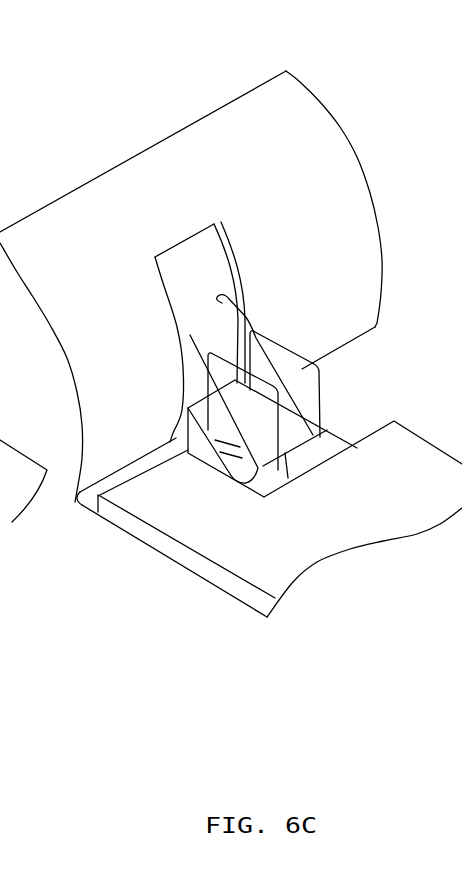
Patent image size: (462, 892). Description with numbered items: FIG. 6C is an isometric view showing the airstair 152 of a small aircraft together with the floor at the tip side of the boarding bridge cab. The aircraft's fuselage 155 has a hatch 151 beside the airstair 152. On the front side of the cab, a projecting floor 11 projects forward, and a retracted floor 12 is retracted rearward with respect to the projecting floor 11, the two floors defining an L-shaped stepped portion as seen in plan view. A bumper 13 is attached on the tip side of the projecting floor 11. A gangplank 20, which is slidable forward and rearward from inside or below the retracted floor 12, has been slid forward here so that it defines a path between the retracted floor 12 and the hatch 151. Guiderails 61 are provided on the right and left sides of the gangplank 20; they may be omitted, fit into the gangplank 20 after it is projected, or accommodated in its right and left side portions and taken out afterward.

The fuselage 155 is at (198, 150).
The hatch 151 is at (198, 267).
The airstair 152 is at (197, 436).
The guiderails 61 is at (266, 343).
The gangplank 20 is at (300, 394).
The retracted floor 12 is at (391, 456).
The projecting floor 11 is at (173, 512).
The bumper 13 is at (90, 500).